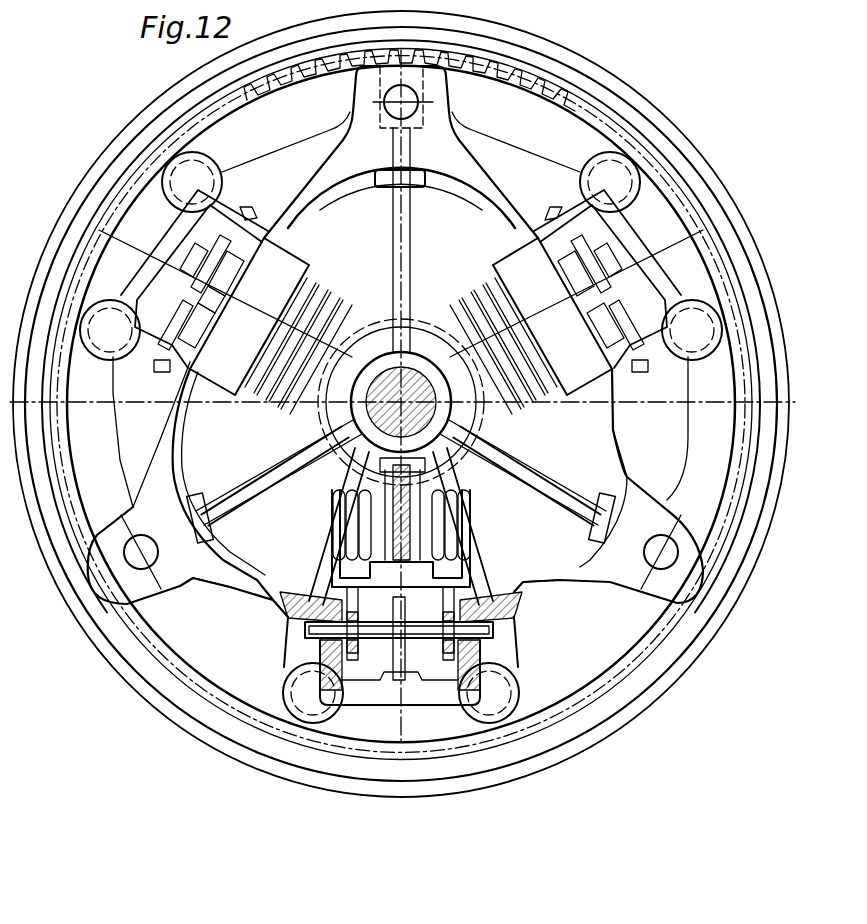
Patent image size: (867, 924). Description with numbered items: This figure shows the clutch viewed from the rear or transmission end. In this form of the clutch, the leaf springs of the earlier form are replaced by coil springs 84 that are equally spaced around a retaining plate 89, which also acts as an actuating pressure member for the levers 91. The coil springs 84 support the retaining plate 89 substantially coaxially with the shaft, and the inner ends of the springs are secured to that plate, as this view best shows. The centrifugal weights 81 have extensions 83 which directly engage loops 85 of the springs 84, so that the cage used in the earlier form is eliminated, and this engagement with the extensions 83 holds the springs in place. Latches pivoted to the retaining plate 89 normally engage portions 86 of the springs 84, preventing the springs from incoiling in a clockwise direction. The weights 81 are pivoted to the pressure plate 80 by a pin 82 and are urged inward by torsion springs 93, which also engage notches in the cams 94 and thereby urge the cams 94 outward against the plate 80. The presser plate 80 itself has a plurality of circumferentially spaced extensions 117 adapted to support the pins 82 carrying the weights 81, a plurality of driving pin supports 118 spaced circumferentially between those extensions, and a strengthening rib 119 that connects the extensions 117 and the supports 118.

The pressure plate 80 is at (213, 603).
The centrifugal weights 81 is at (290, 427).
The pin 82 is at (333, 632).
The extensions 83 is at (450, 600).
The coil springs 84 is at (342, 583).
The loops 85 is at (340, 520).
The portions 86 is at (380, 562).
The retaining plate 89 is at (357, 455).
The levers 91 is at (528, 480).
The torsion springs 93 is at (200, 267).
The cams 94 is at (193, 262).
The extensions 117 is at (473, 653).
The driving pin supports 118 is at (645, 582).
The strengthening rib 119 is at (560, 583).